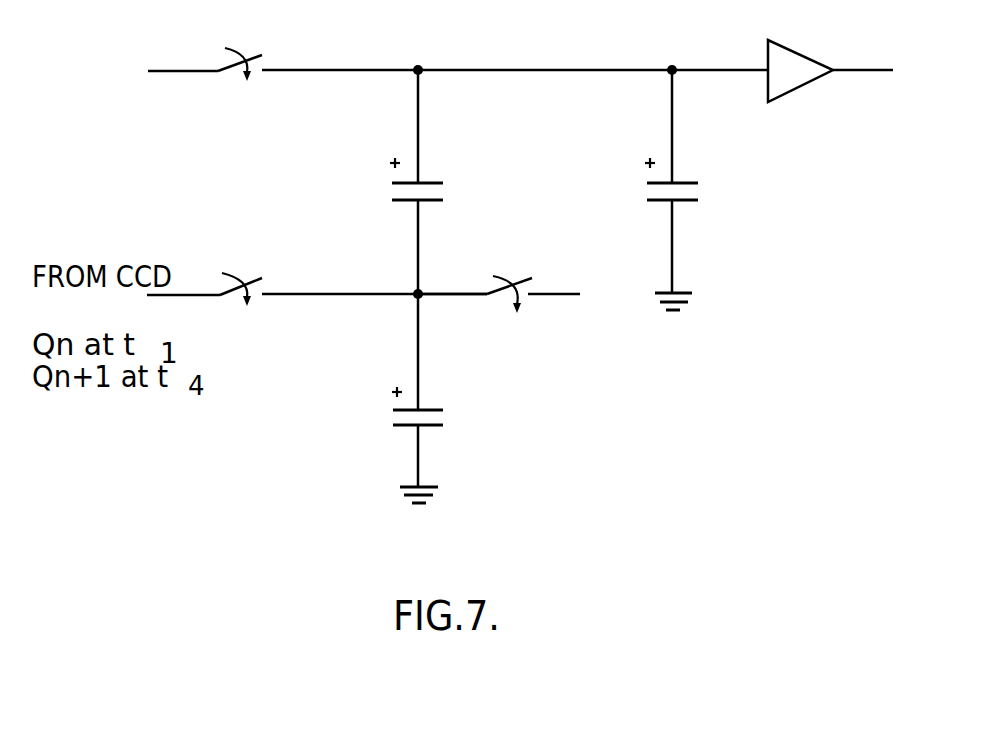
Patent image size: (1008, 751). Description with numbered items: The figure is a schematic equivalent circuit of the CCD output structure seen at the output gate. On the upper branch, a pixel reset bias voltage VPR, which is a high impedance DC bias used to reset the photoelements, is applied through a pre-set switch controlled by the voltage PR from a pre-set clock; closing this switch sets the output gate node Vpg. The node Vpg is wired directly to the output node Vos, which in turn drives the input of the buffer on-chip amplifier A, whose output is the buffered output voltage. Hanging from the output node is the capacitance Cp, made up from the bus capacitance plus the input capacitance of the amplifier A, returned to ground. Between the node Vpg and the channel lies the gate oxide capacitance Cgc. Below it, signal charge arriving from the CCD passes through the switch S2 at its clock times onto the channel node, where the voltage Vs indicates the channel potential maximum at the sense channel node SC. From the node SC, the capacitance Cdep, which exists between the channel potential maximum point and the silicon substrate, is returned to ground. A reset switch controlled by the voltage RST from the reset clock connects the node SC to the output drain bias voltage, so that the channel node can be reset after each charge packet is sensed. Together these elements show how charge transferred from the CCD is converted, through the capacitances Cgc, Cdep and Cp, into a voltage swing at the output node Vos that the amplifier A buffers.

The pixel reset bias voltage VPR is at (148, 69).
The pre-set clock voltage PR is at (259, 70).
The output gate voltage node Vpg is at (445, 55).
The output voltage Vos is at (698, 53).
The amplifier A is at (836, 74).
The gate oxide capacitance Cgc is at (445, 182).
The bus and amplifier input capacitance Cp is at (687, 190).
The CCD transfer switch S2 is at (242, 281).
The channel potential maximum Vs is at (395, 277).
The sense channel node SC is at (452, 274).
The reset clock voltage RST is at (562, 288).
The depletion capacitance Cdep is at (454, 398).